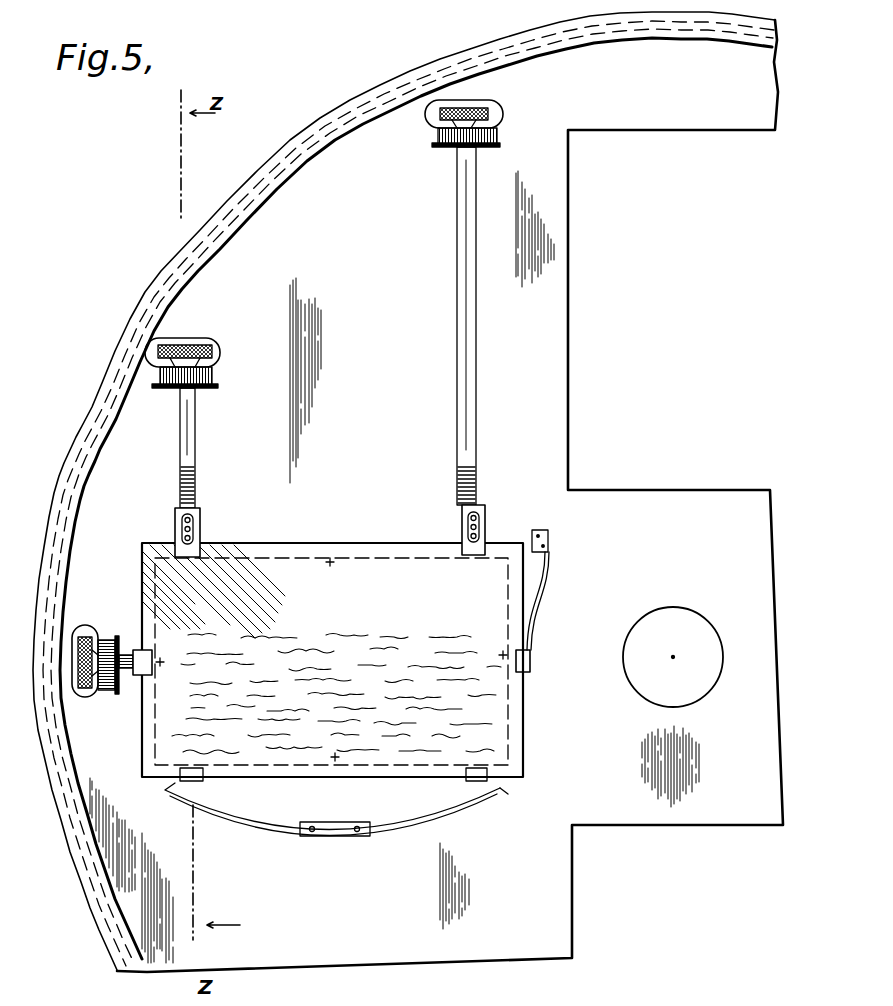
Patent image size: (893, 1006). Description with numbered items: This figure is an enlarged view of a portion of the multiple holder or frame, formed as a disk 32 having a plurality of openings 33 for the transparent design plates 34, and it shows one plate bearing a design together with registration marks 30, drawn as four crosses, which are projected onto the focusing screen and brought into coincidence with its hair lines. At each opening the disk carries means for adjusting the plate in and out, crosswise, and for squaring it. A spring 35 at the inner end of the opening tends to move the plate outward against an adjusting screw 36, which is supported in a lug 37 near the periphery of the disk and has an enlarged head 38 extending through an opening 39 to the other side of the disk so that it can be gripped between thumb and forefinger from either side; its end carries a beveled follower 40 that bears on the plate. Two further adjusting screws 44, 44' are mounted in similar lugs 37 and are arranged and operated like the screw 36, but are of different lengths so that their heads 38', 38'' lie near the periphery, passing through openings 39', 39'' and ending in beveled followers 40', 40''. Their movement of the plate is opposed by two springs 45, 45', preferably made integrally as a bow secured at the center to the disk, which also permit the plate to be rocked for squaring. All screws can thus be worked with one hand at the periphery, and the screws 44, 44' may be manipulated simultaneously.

The registration marks 30 is at (331, 563).
The disk 32 is at (387, 273).
The openings 33 is at (672, 150).
The transparent design plates 34 is at (332, 660).
The spring 35 is at (553, 590).
The adjusting screws 36 is at (125, 655).
The lugs 37 is at (445, 140).
The enlarged heads 38 is at (90, 690).
The enlarged head 38' is at (218, 344).
The enlarged head 38'' is at (508, 107).
The openings 39 is at (85, 641).
The opening 39' is at (190, 330).
The opening 39'' is at (439, 121).
The beveled follower 40 is at (135, 677).
The beveled follower 40' is at (217, 532).
The beveled follower 40'' is at (506, 528).
The adjusting screw 44 is at (216, 448).
The adjusting screw 44' is at (444, 326).
The spring 45 is at (332, 809).
The spring 45' is at (461, 805).